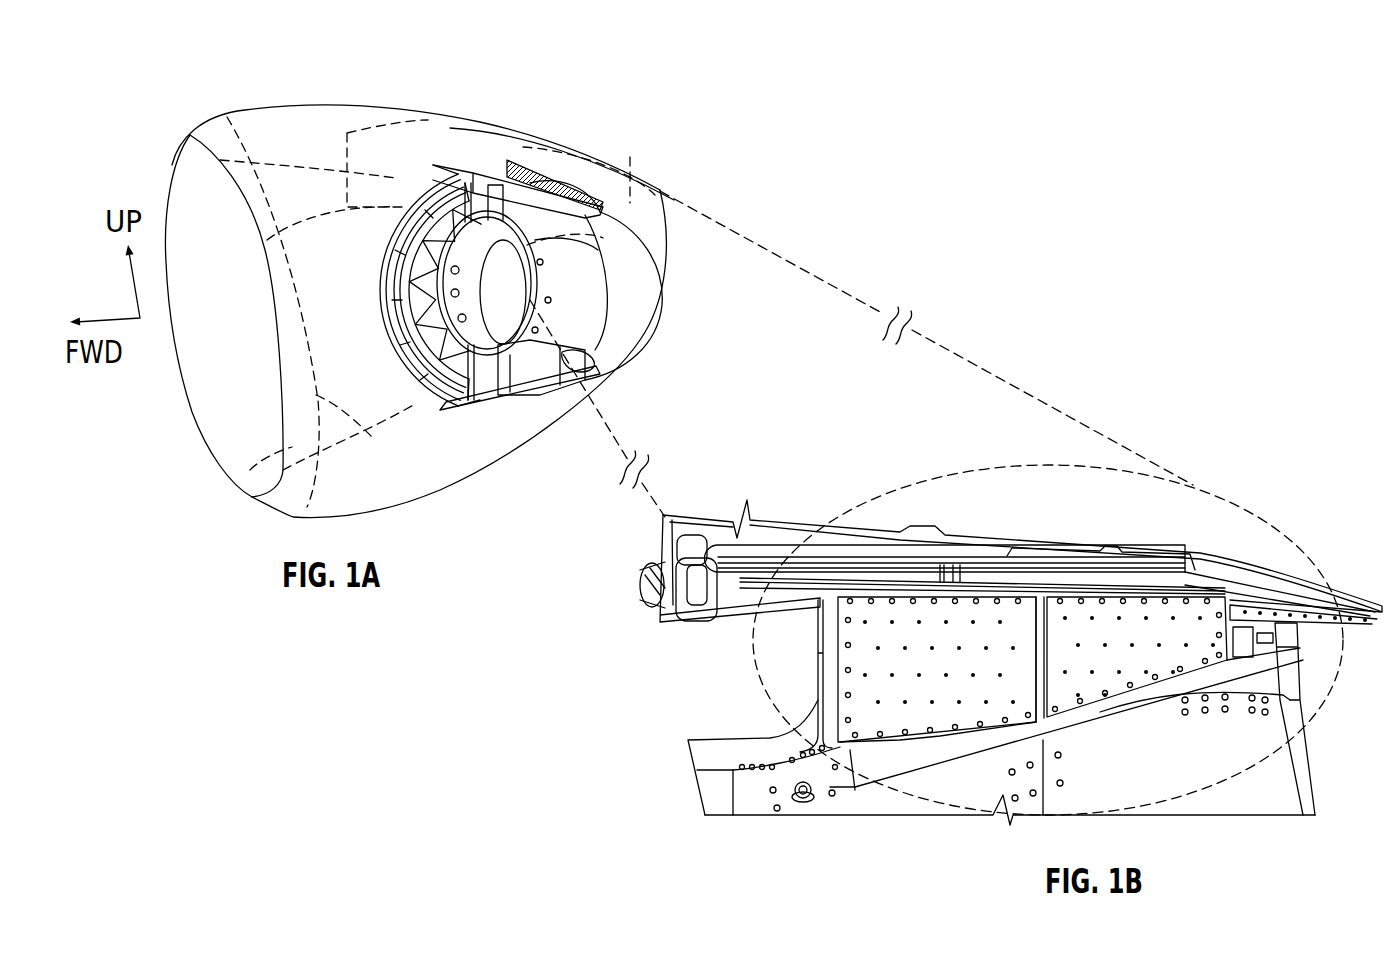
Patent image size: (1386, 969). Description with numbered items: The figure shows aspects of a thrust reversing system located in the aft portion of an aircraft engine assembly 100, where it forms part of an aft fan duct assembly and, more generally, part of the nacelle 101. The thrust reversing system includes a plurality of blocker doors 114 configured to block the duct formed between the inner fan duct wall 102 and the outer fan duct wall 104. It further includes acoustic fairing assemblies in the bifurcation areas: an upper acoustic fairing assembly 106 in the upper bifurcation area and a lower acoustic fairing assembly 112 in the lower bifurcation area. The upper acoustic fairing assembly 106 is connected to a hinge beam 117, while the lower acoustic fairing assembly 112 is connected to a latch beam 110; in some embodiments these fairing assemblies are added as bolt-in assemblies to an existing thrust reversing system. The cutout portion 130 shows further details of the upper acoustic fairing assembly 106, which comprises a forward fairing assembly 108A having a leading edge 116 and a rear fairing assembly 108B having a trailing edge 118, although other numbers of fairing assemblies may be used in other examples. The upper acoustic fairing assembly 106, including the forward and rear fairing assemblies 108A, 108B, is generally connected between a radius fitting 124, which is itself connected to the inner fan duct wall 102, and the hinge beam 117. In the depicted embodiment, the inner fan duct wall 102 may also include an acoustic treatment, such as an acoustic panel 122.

In FIG. 1A, the engine assembly 100 is at (624, 57).
In FIG. 1A, the nacelle 101 is at (236, 112).
In FIG. 1A, the inner fan duct wall 102 is at (610, 290).
In FIG. 1A, the outer fan duct wall 104 is at (425, 245).
In FIG. 1A, the upper acoustic fairing assembly 106 is at (535, 193).
In FIG. 1B, the forward fairing assembly 108A is at (937, 662).
In FIG. 1B, the rear fairing assembly 108B is at (1068, 662).
In FIG. 1A, the latch beam 110 is at (504, 398).
In FIG. 1A, the lower acoustic fairing assembly 112 is at (535, 370).
In FIG. 1A, the blocker doors 114 is at (415, 293).
In FIG. 1A, the leading edge 116 is at (572, 367).
In FIG. 1B, the leading edge 116 is at (822, 673).
In FIG. 1B, the hinge beam 117 is at (752, 592).
In FIG. 1B, the trailing edge 118 is at (1234, 642).
In FIG. 1B, the acoustic panel 122 is at (902, 807).
In FIG. 1B, the radius fitting 124 is at (700, 752).
In FIG. 1A, the cutout portion 130 is at (570, 142).
In FIG. 1B, the cutout portion 130 is at (1233, 423).